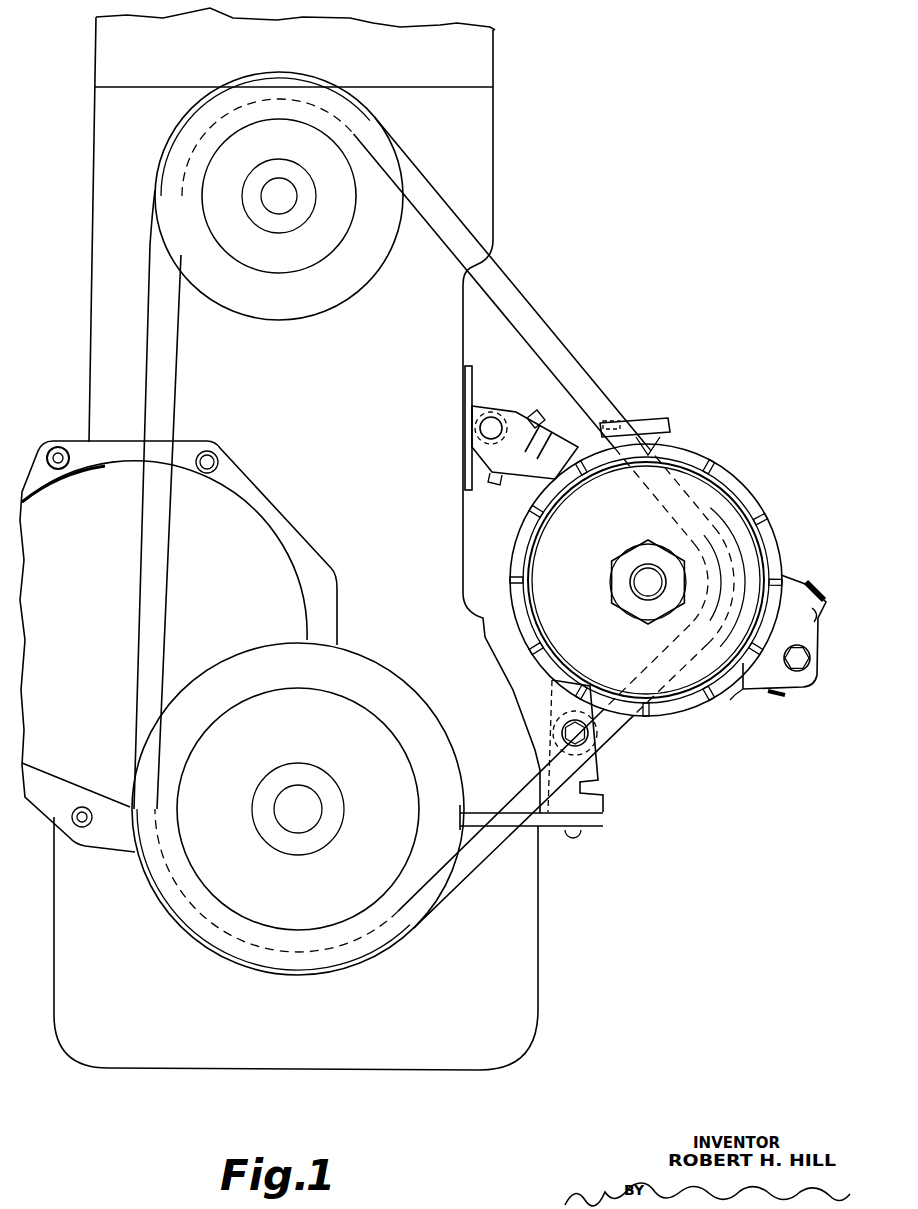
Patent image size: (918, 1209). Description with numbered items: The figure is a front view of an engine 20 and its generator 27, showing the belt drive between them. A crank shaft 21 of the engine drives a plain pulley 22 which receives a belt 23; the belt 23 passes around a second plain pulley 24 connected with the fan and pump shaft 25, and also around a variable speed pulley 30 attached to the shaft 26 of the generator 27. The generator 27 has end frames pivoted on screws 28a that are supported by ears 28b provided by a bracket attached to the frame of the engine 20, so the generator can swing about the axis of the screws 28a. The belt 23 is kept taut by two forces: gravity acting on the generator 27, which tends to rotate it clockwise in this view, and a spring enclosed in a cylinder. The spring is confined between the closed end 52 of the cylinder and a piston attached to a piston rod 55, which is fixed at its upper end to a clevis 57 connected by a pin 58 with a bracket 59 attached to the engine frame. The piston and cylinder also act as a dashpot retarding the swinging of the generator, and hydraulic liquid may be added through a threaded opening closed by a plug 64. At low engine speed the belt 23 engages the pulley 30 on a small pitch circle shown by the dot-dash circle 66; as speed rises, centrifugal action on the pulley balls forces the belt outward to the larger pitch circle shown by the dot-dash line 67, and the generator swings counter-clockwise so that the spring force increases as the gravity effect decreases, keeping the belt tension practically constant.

The engine 20 is at (95, 197).
The crank shaft 21 is at (298, 809).
The plain pulley 22 is at (363, 660).
The belt 23 is at (184, 373).
The plain pulley 24 is at (313, 312).
The fan and pump shaft 25 is at (283, 200).
The shaft 26 is at (640, 576).
The generator 27 is at (780, 538).
The screws 28a is at (803, 658).
The ears 28b is at (592, 771).
The variable speed pulley 30 is at (727, 490).
The closed end 52 is at (818, 617).
The piston rod 55 is at (537, 462).
The clevis 57 is at (533, 418).
The pin 58 is at (493, 422).
The bracket 59 is at (472, 372).
The plug 64 is at (816, 586).
The dot-dash circle 66 is at (712, 612).
The dot-dash line 67 is at (743, 690).